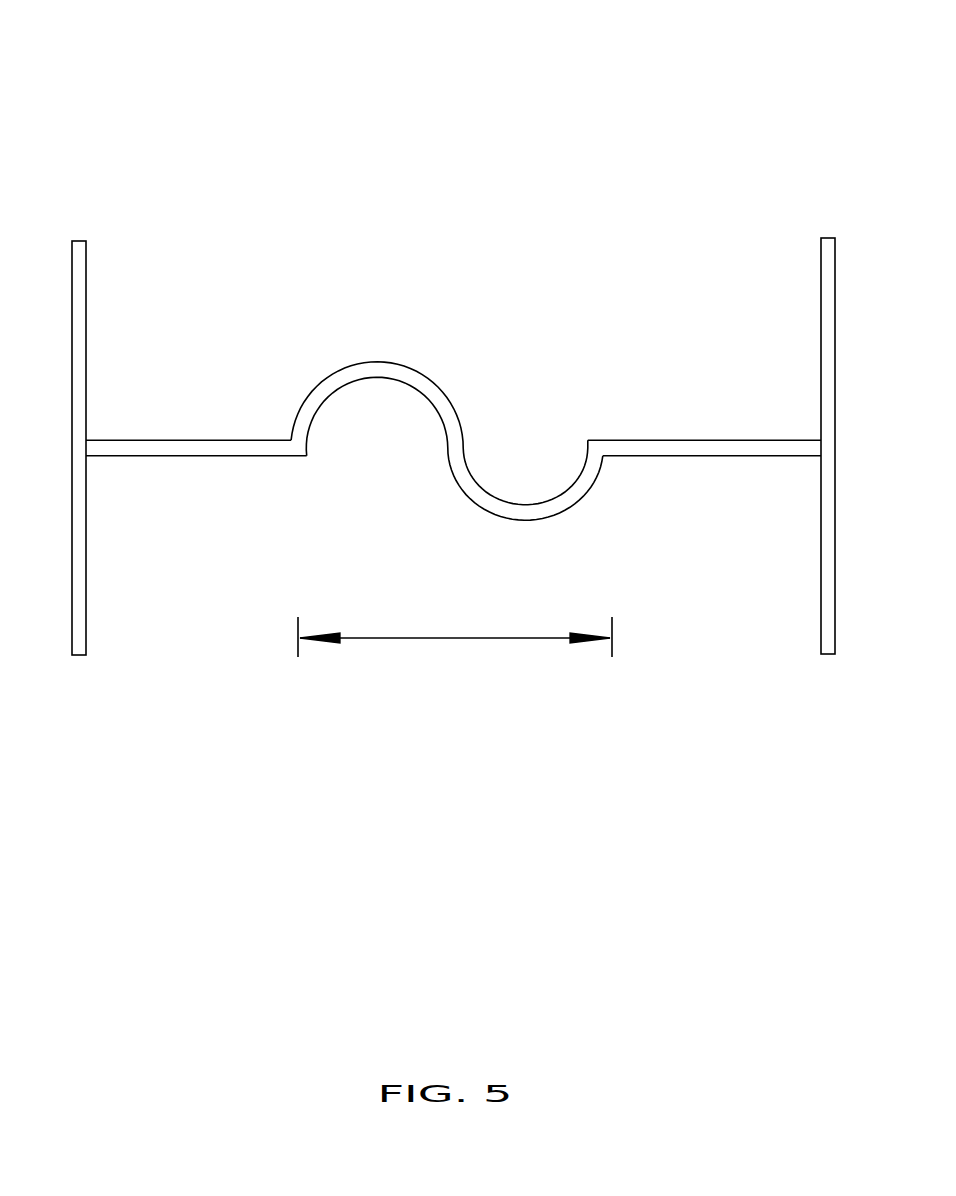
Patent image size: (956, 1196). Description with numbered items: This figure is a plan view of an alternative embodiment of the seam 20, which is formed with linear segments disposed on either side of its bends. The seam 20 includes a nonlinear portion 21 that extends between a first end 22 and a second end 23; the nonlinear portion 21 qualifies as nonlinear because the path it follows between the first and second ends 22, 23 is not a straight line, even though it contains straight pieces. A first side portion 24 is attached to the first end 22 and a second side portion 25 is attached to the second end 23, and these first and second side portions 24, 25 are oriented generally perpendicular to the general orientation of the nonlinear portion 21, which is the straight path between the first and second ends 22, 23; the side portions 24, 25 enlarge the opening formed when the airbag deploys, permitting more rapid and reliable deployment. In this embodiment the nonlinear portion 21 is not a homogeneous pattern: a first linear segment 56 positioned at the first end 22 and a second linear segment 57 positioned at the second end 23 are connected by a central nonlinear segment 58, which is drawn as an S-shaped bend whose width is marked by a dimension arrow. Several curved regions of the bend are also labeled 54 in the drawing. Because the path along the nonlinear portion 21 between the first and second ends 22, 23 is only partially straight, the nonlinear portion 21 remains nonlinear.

The seam 20 is at (531, 128).
The nonlinear portion 21 is at (470, 230).
The first end 22 is at (194, 537).
The second end 23 is at (698, 519).
The first side portion 24 is at (80, 297).
The second side portion 25 is at (830, 258).
The curved portions of web 54 is at (380, 366).
The first linear segment 56 is at (188, 452).
The second linear segment 57 is at (715, 451).
The nonlinear segment 58 is at (418, 630).